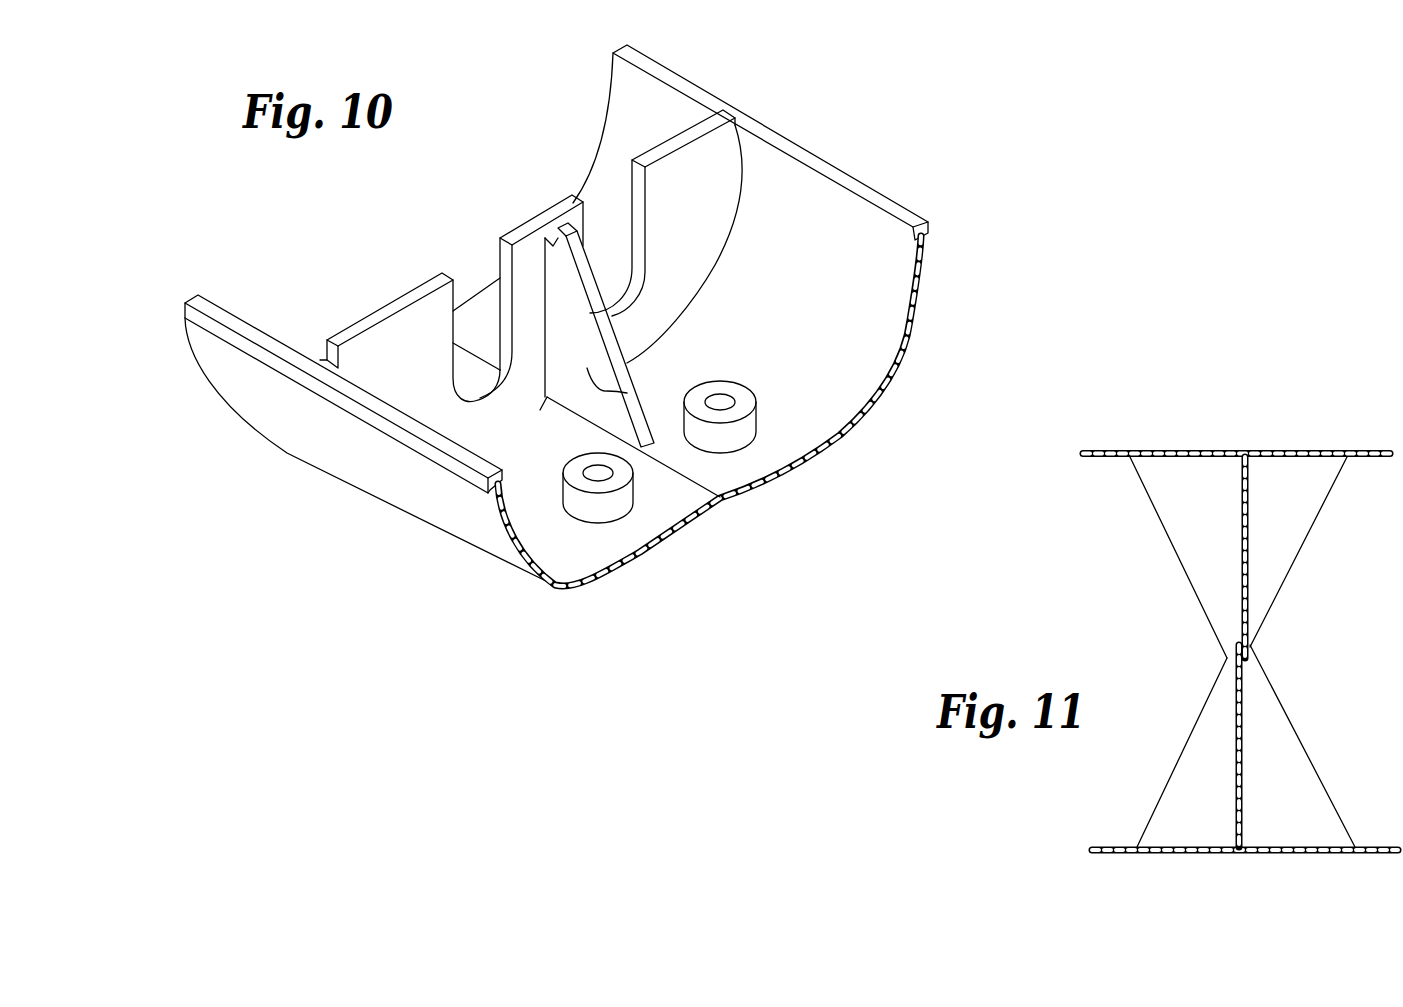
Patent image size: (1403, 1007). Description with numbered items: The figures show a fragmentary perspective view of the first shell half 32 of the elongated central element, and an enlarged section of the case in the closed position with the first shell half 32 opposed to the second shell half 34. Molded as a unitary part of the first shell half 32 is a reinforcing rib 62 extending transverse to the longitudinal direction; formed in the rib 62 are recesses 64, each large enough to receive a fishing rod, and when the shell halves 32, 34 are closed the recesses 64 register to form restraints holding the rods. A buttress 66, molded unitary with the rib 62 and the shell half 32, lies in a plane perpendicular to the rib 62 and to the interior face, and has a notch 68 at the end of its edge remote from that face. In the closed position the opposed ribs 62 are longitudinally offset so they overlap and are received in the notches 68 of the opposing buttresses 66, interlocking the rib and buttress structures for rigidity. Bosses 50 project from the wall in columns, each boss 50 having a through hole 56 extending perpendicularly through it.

In FIG. 10, the first shell half 32 is at (853, 363).
In FIG. 11, the first shell half 32 is at (1284, 450).
In FIG. 11, the second shell half 34 is at (1293, 853).
In FIG. 10, the boss 50 is at (730, 433).
In FIG. 10, the through hole 56 is at (722, 400).
In FIG. 10, the reinforcing rib 62 is at (398, 330).
In FIG. 11, the reinforcing rib 62 is at (1243, 562).
In FIG. 10, the recess 64 is at (614, 188).
In FIG. 10, the buttress 66 is at (637, 393).
In FIG. 11, the buttress 66 is at (1285, 528).
In FIG. 10, the notch 68 is at (553, 240).
In FIG. 11, the notch 68 is at (1247, 653).